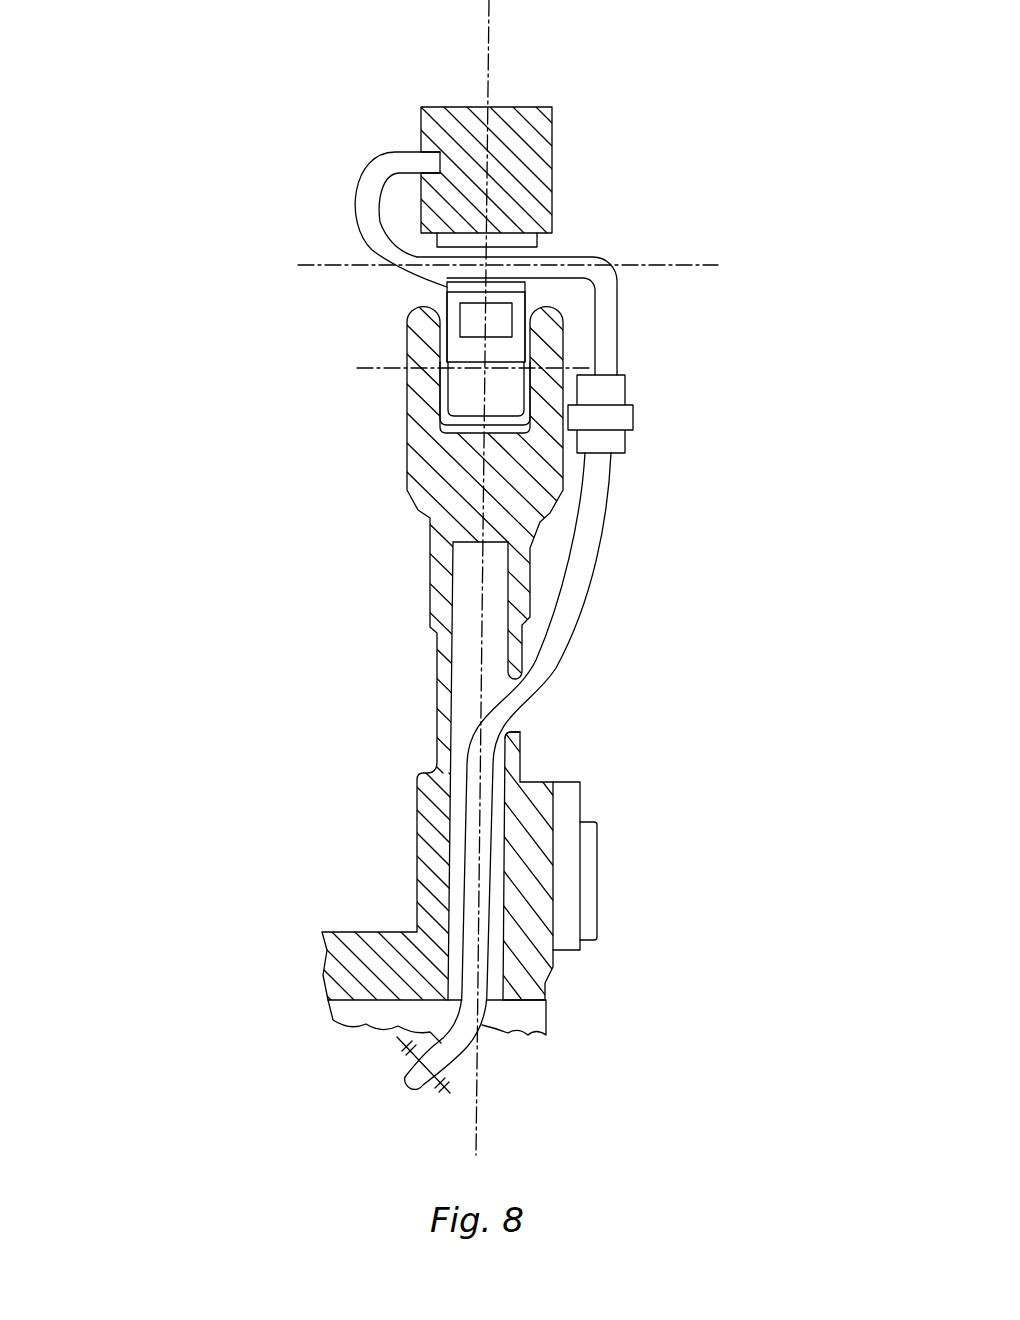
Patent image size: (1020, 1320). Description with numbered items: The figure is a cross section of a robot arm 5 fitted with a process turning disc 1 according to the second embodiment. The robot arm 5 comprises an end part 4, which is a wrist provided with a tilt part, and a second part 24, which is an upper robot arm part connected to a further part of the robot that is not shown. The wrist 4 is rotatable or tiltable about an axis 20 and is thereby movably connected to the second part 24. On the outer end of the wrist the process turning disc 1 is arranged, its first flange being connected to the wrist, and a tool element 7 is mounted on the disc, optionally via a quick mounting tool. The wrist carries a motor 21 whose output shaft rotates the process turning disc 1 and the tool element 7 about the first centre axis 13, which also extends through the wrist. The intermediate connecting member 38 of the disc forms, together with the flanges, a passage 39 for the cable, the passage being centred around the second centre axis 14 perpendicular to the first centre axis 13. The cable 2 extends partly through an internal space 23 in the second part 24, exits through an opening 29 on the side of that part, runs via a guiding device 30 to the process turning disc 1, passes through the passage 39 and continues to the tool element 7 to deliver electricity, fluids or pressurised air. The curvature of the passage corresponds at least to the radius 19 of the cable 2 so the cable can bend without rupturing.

The robot arm 5 is at (212, 88).
The first centre axis 13 is at (489, 12).
The tool element 7 is at (553, 130).
The process turning disc 1 is at (500, 246).
The second centre axis 14 is at (703, 268).
The passage 39 is at (445, 281).
The intermediate connecting member 38 is at (441, 289).
The end part 4 is at (463, 347).
The motor 21 is at (493, 320).
The axis 20 is at (387, 370).
The guiding device 30 is at (634, 418).
The second part 24 is at (457, 497).
The cable 2 is at (577, 598).
The internal space 23 is at (463, 707).
The opening 29 is at (510, 731).
The radius 19 is at (413, 1080).